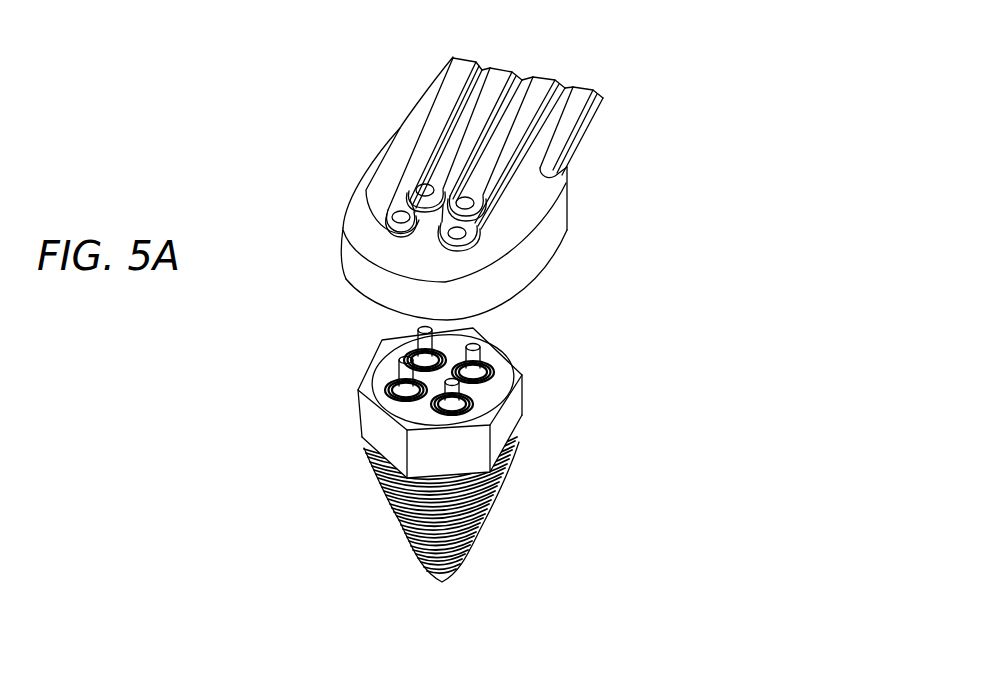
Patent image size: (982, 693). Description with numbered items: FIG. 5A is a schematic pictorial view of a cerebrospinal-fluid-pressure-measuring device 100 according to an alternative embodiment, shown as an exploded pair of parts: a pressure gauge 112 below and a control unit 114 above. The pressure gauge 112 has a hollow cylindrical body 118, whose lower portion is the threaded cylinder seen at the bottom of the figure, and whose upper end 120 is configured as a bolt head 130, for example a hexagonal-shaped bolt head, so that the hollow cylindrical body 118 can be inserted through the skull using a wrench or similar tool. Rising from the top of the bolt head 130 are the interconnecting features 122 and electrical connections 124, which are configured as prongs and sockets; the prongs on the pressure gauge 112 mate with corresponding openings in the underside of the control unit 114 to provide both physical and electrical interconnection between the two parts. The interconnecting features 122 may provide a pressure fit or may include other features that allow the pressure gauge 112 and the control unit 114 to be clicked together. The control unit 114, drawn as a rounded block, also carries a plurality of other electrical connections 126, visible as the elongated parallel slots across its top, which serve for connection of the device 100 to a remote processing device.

The cerebrospinal-fluid-pressure-measuring device 100 is at (772, 131).
The pressure gauge 112 is at (372, 490).
The control unit 114 is at (568, 212).
The hollow cylindrical body 118 is at (493, 540).
The upper end 120 is at (509, 403).
The interconnecting features 122 is at (348, 371).
The electrical connections 124 is at (417, 337).
The other electrical connections 126 is at (475, 60).
The bolt head 130 is at (523, 390).